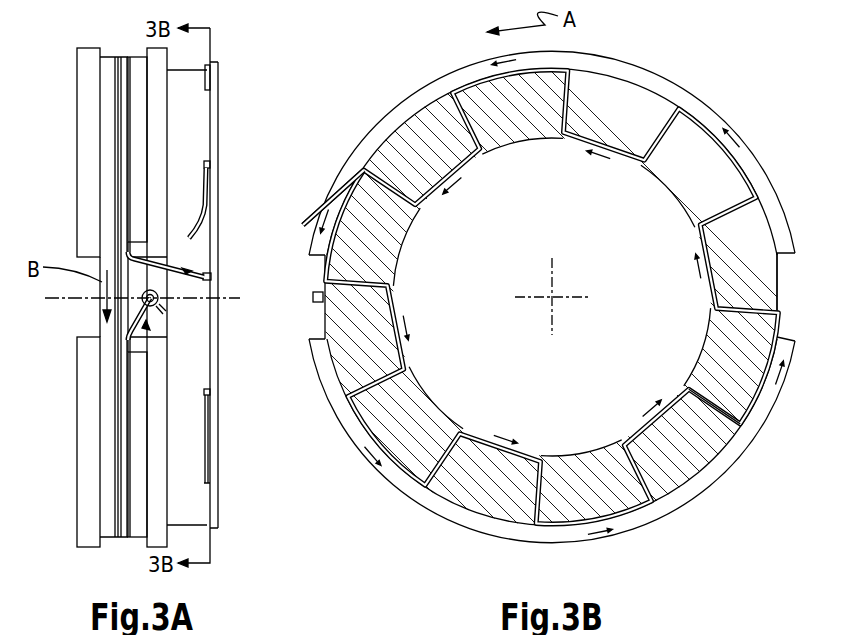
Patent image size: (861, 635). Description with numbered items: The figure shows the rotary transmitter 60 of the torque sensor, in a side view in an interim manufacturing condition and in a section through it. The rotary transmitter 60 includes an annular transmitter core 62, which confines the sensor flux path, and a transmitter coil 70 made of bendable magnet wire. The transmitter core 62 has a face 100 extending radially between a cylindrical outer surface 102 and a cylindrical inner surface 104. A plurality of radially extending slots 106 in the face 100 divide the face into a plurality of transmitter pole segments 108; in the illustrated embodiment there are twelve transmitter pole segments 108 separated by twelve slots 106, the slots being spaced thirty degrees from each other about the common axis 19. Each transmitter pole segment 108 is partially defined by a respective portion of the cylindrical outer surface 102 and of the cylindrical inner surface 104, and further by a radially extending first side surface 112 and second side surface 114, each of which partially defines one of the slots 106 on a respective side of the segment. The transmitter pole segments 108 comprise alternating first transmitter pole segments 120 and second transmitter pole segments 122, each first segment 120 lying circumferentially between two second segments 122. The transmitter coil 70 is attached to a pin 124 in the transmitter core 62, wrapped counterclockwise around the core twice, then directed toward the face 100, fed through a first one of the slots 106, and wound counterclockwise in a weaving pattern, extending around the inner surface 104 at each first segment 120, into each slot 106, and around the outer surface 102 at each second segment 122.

In FIG. 3A, the common axis 19 is at (67, 302).
In FIG. 3B, the common axis 19 is at (556, 292).
In FIG. 3A, the rotary transmitter 60 is at (139, 297).
In FIG. 3B, the rotary transmitter 60 is at (552, 290).
In FIG. 3A, the transmitter core 62 is at (183, 143).
In FIG. 3B, the transmitter core 62 is at (680, 93).
In FIG. 3A, the transmitter coil 70 is at (190, 238).
In FIG. 3B, the transmitter coil 70 is at (400, 343).
In FIG. 3A, the face 100 is at (222, 112).
In FIG. 3A, the cylindrical outer surface 102 is at (213, 67).
In FIG. 3B, the cylindrical inner surface 104 is at (527, 137).
In FIG. 3A, the radially extending slots 106 is at (212, 163).
In FIG. 3B, the radially extending slots 106 is at (392, 270).
In FIG. 3B, the transmitter pole segments 108 is at (562, 304).
In FIG. 3B, the first side surface 112 is at (778, 310).
In FIG. 3B, the second side surface 114 is at (725, 417).
In FIG. 3B, the first transmitter pole segments 120 is at (393, 292).
In FIG. 3B, the second transmitter pole segments 122 is at (362, 193).
In FIG. 3A, the pin 124 is at (147, 292).
In FIG. 3B, the pin 124 is at (310, 300).